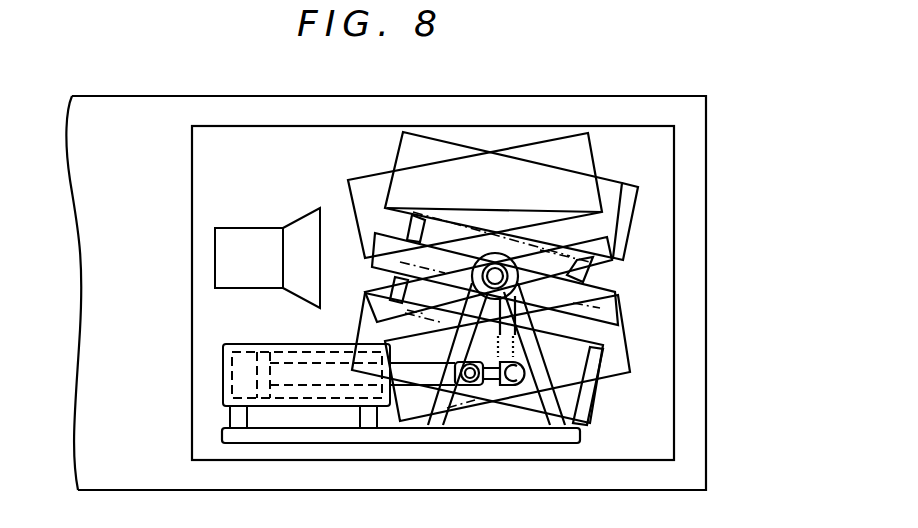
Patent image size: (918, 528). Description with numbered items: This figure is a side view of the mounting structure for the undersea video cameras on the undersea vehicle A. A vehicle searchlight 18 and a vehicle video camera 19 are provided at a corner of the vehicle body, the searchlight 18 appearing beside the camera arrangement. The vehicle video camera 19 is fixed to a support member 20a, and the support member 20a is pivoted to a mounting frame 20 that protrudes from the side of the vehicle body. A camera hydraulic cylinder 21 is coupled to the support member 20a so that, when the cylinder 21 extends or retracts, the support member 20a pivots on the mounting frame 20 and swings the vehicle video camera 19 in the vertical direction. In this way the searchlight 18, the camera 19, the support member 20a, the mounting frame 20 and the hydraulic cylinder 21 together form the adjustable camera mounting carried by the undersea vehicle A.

The vehicle searchlight 18 is at (247, 228).
The vehicle video camera 19 is at (397, 152).
The mounting frame 20 is at (580, 435).
The support member 20a is at (365, 252).
The camera hydraulic cylinder 21 is at (253, 344).
The undersea vehicle A is at (712, 300).